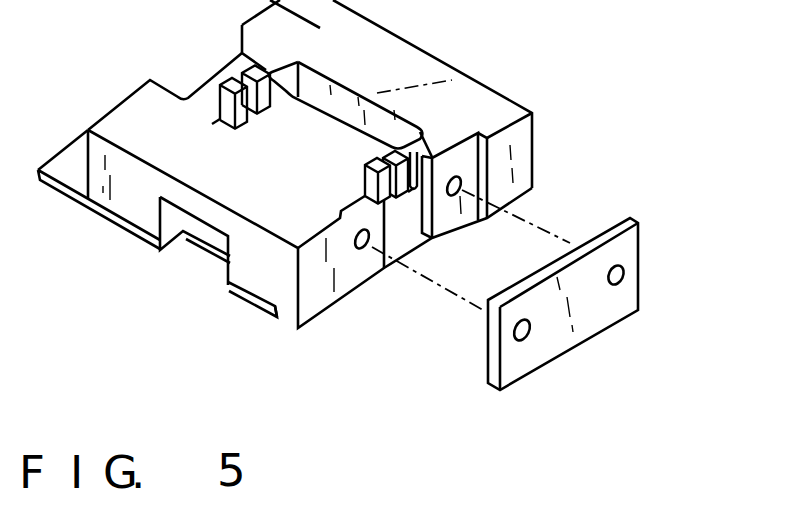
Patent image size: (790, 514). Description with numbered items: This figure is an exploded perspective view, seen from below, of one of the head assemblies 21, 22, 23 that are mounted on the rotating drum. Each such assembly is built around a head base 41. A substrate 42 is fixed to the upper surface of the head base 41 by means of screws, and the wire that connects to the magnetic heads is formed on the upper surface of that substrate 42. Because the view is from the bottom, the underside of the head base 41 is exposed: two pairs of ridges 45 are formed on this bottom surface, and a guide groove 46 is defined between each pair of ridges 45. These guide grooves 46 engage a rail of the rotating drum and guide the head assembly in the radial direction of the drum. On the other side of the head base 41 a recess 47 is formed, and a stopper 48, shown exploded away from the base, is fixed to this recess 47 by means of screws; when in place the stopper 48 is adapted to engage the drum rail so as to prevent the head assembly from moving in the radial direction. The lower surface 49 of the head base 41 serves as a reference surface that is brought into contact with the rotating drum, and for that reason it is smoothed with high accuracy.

The head assembly 21 is at (139, 274).
The head assembly 22 is at (151, 275).
The head assembly 23 is at (197, 318).
The head base 41 is at (332, 303).
The substrate 42 is at (250, 300).
The ridges 45 is at (253, 63).
The guide groove 46 is at (255, 113).
The recess 47 is at (472, 163).
The stopper 48 is at (638, 268).
The lower surface 49 is at (428, 62).